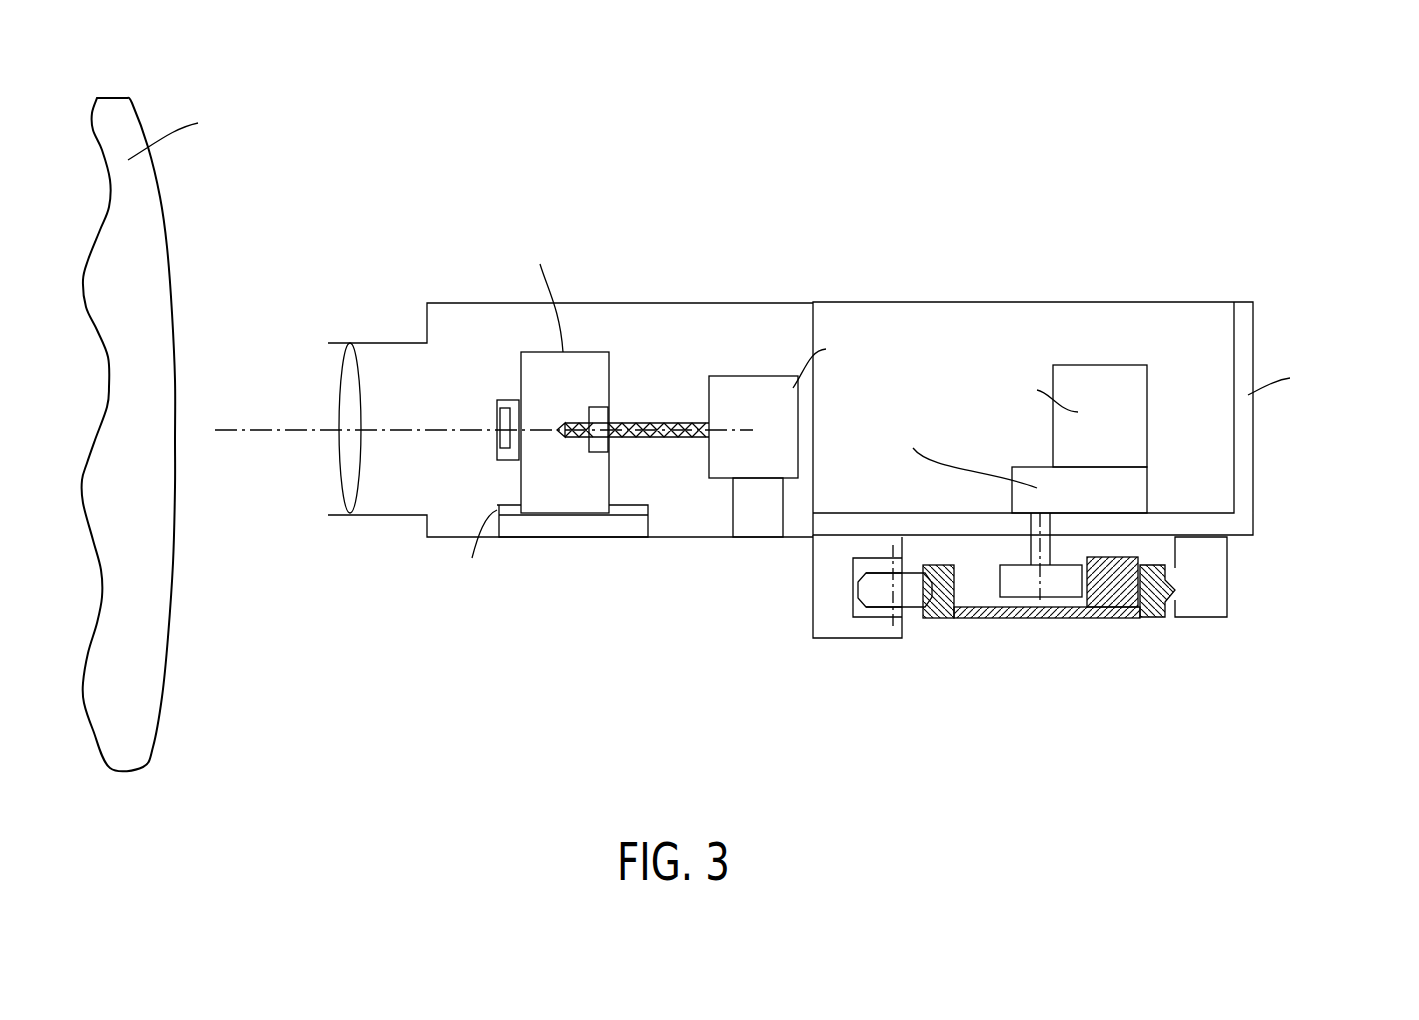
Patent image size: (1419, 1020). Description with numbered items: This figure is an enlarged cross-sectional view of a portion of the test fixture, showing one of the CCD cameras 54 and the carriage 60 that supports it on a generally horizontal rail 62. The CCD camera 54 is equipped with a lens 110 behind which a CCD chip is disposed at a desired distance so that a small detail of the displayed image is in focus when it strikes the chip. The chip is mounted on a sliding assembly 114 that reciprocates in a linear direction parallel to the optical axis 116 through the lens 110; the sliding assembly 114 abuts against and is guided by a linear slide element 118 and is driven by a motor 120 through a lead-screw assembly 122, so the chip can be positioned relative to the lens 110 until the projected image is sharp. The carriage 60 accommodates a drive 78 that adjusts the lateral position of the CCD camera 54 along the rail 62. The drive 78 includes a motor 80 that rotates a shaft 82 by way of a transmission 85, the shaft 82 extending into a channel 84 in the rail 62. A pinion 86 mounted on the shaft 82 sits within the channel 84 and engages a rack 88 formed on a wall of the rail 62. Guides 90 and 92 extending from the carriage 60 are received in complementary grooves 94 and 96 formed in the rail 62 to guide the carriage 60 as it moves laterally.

The CCD camera 54 is at (598, 728).
The carriage 60 is at (1255, 340).
The rail 62 is at (930, 552).
The drive 78 is at (987, 357).
The motor 80 is at (1077, 365).
The shaft 82 is at (1030, 553).
The channel 84 is at (968, 591).
The transmission 85 is at (1148, 490).
The pinion 86 is at (1053, 587).
The rack 88 is at (1092, 597).
The guide 90 is at (915, 607).
The guide 92 is at (1173, 575).
The groove 94 is at (937, 615).
The groove 96 is at (1162, 605).
The lens 110 is at (338, 400).
The sliding assembly 114 is at (582, 352).
The optical axis 116 is at (310, 433).
The linear slide element 118 is at (510, 503).
The motor 120 is at (730, 376).
The lead-screw assembly 122 is at (602, 407).